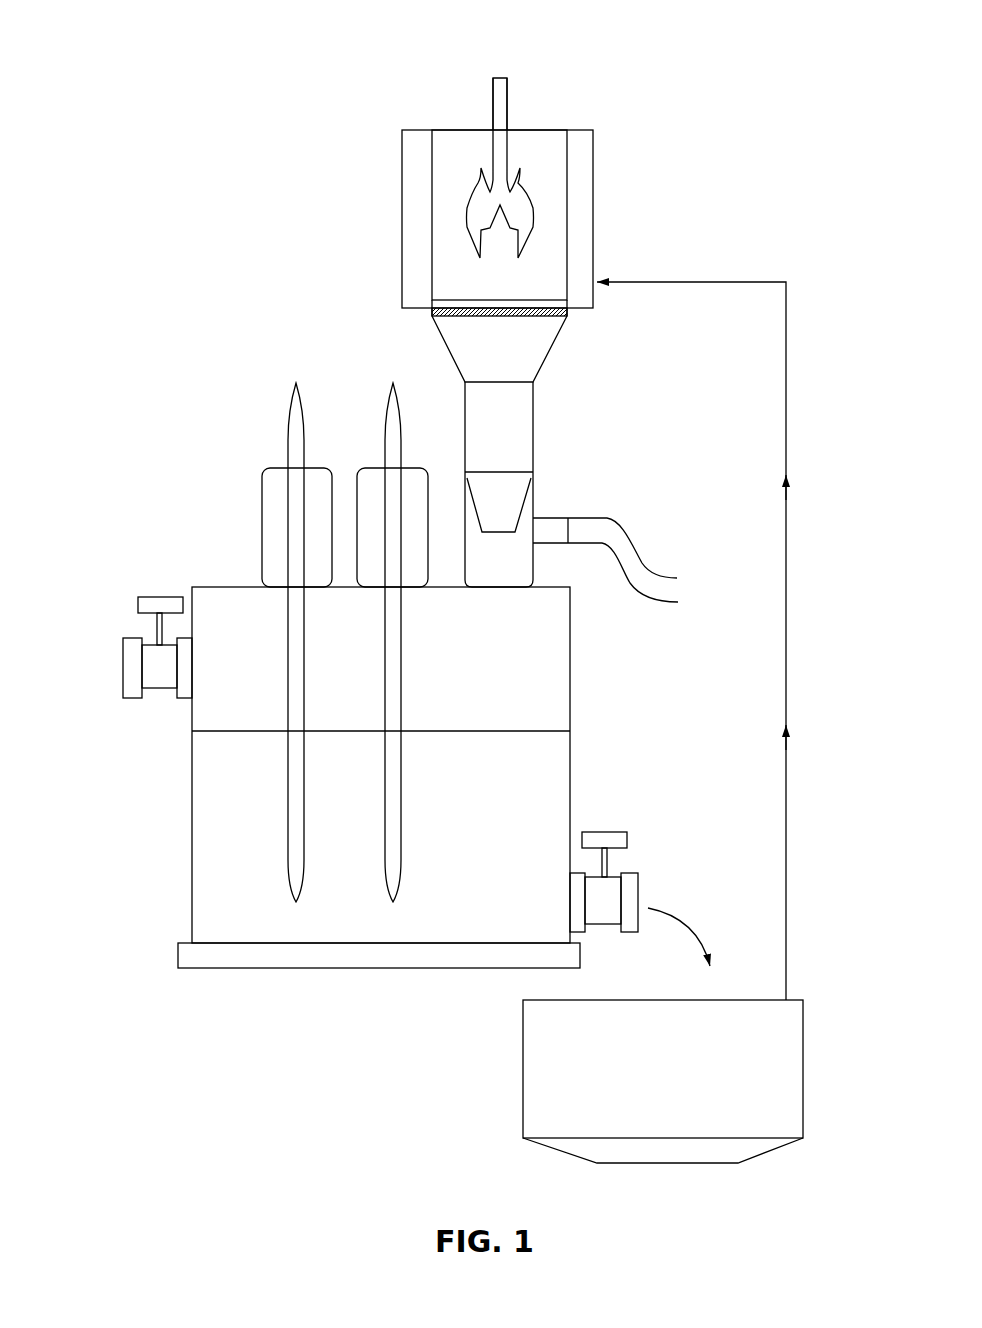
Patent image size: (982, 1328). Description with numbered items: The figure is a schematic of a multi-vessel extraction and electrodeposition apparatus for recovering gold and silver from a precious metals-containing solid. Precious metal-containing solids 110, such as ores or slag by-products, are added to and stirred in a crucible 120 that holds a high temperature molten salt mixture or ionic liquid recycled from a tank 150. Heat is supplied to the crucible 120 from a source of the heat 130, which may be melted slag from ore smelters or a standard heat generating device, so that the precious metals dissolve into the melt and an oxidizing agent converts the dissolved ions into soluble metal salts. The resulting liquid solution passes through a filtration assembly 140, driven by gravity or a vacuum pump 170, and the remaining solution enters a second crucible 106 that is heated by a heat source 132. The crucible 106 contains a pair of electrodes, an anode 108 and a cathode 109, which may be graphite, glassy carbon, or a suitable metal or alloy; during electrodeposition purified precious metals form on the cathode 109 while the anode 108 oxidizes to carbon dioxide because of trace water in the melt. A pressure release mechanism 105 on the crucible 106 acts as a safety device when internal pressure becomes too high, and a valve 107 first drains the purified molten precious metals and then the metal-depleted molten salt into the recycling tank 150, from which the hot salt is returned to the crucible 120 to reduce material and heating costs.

The precious metal-containing solids 110 is at (388, 88).
The crucible 120 is at (543, 142).
The source of the heat 130 is at (401, 206).
The filtration assembly 140 is at (575, 313).
The vacuum pump 170 is at (670, 593).
The crucible 106 is at (222, 824).
The heat source 132 is at (211, 970).
The anode electrode 108 is at (297, 449).
The cathode electrode 109 is at (393, 449).
The pressure release mechanism 105 is at (132, 687).
The valve 107 is at (627, 886).
The recycling tank 150 is at (542, 1113).